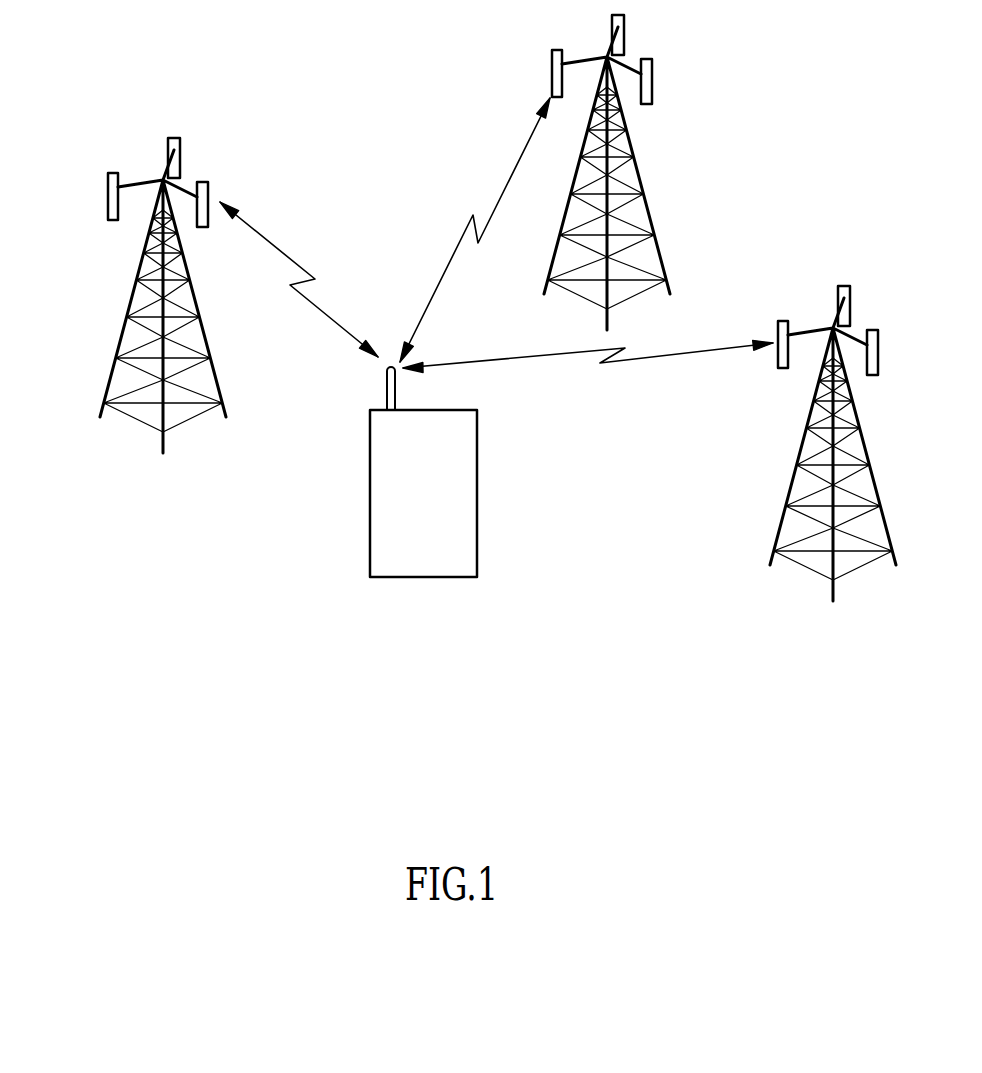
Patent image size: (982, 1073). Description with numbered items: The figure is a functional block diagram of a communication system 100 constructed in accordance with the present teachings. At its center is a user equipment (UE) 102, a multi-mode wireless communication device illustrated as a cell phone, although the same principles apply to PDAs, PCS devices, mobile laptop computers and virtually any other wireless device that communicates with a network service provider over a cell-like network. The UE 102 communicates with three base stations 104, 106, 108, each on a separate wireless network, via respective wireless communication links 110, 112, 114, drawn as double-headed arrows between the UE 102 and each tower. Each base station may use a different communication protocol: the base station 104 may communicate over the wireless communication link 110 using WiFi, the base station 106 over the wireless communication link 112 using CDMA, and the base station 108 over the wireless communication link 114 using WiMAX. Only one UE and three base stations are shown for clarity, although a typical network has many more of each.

The system 100 is at (215, 578).
The user equipment (UE) 102 is at (477, 485).
The base station 104 is at (122, 332).
The base station 106 is at (640, 183).
The base station 108 is at (800, 443).
The wireless communication link 110 is at (295, 262).
The wireless communication link 112 is at (500, 195).
The wireless communication link 114 is at (673, 360).